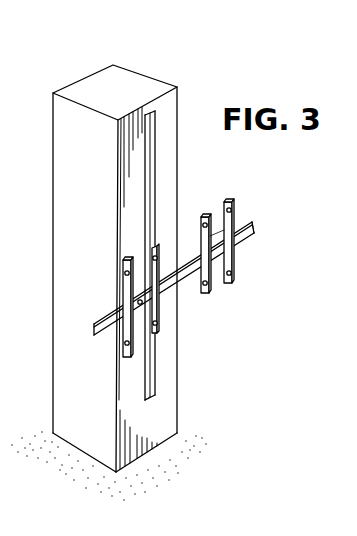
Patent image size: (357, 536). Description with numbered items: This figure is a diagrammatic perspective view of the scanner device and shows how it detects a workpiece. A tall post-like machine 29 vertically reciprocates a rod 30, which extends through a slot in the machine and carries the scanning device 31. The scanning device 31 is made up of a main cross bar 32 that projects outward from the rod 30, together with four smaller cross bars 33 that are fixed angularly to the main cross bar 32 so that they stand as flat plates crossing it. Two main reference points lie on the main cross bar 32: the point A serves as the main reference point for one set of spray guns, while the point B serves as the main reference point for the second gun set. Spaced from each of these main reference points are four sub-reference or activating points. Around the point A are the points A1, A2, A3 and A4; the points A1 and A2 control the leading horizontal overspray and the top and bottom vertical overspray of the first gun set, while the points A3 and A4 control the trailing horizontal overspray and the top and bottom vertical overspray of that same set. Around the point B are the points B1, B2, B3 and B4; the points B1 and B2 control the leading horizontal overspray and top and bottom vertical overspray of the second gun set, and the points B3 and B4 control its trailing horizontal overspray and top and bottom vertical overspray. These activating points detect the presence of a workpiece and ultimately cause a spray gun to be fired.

The machine 29 is at (73, 430).
The rod 30 is at (159, 260).
The scanning device 31 is at (268, 230).
The main cross bar 32 is at (163, 289).
The smaller cross bars 33 is at (128, 326).
The point A is at (224, 236).
The sub-reference point A1 is at (231, 208).
The sub-reference point A2 is at (232, 273).
The sub-reference point A3 is at (207, 286).
The sub-reference point A4 is at (205, 222).
The point B is at (137, 302).
The sub-reference point B1 is at (155, 255).
The sub-reference point B2 is at (157, 325).
The sub-reference point B3 is at (127, 346).
The sub-reference point B4 is at (125, 272).